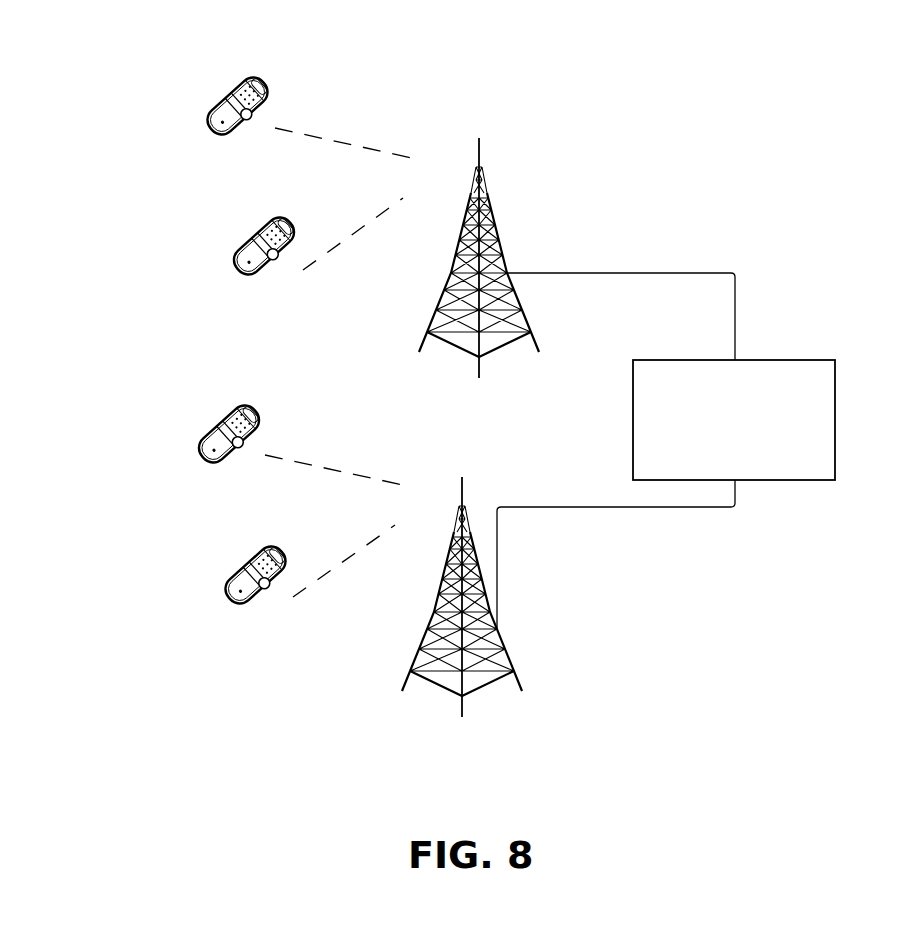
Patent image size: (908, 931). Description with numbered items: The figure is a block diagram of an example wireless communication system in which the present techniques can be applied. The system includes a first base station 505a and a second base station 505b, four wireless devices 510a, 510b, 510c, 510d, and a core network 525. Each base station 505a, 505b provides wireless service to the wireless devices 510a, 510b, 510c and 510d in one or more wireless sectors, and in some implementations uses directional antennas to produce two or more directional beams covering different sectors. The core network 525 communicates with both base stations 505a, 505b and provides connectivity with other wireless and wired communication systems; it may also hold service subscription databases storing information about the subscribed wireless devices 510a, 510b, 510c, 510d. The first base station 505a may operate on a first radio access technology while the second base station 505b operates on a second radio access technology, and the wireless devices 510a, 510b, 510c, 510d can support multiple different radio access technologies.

The wireless device 510a is at (242, 82).
The wireless device 510b is at (264, 221).
The wireless device 510c is at (231, 408).
The wireless device 510d is at (256, 548).
The base station 505a is at (494, 216).
The base station 505b is at (465, 502).
The core network 525 is at (652, 360).